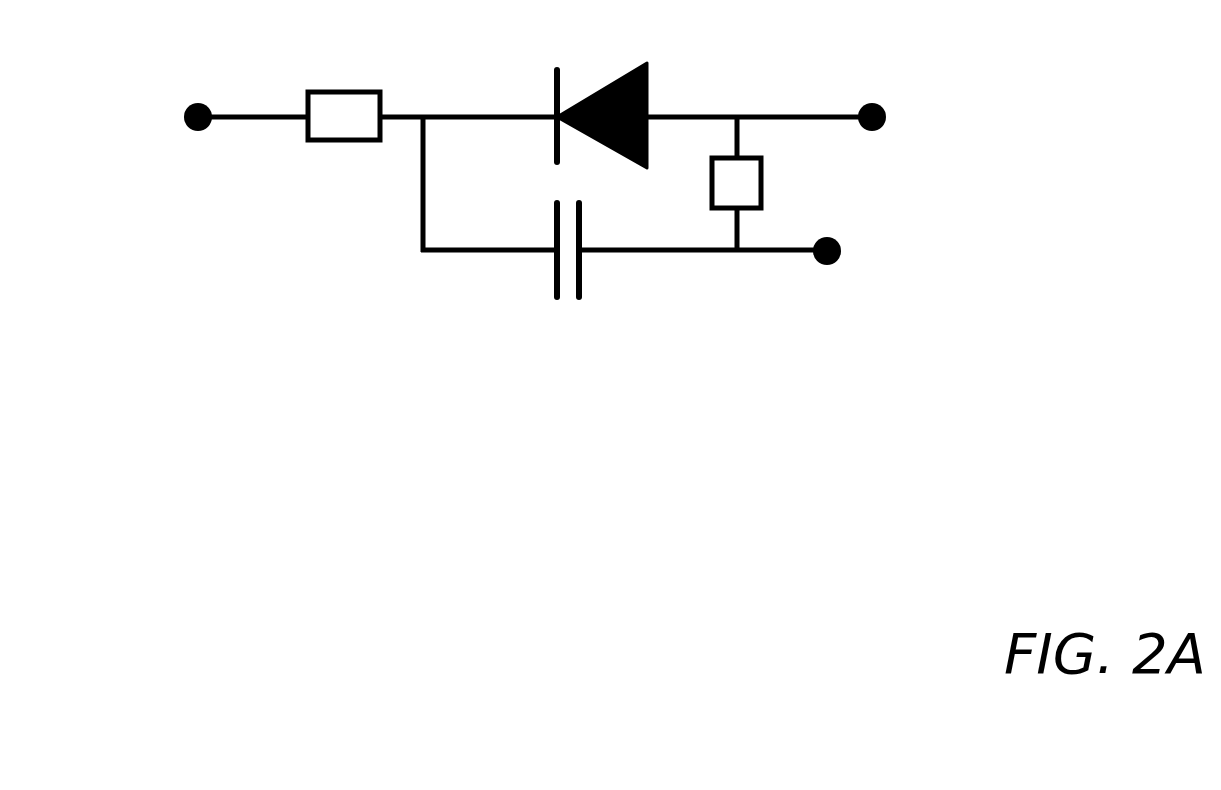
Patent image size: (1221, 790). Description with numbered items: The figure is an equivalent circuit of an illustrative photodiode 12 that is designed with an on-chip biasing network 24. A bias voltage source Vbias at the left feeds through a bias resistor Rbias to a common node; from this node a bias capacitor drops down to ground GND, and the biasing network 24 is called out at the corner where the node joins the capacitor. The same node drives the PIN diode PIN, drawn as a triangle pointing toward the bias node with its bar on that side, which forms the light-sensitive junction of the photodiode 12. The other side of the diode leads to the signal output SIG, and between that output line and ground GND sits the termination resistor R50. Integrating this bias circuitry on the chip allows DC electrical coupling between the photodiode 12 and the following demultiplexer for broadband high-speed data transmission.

The photodiode 12 is at (735, 93).
The on-chip biasing network 24 is at (424, 260).
The PIN diode PIN is at (602, 93).
The bias resistor Rbias is at (344, 143).
The termination resistor R50 is at (782, 183).
The bias voltage source Vbias is at (246, 82).
The signal output SIG is at (905, 118).
The ground GND is at (867, 252).